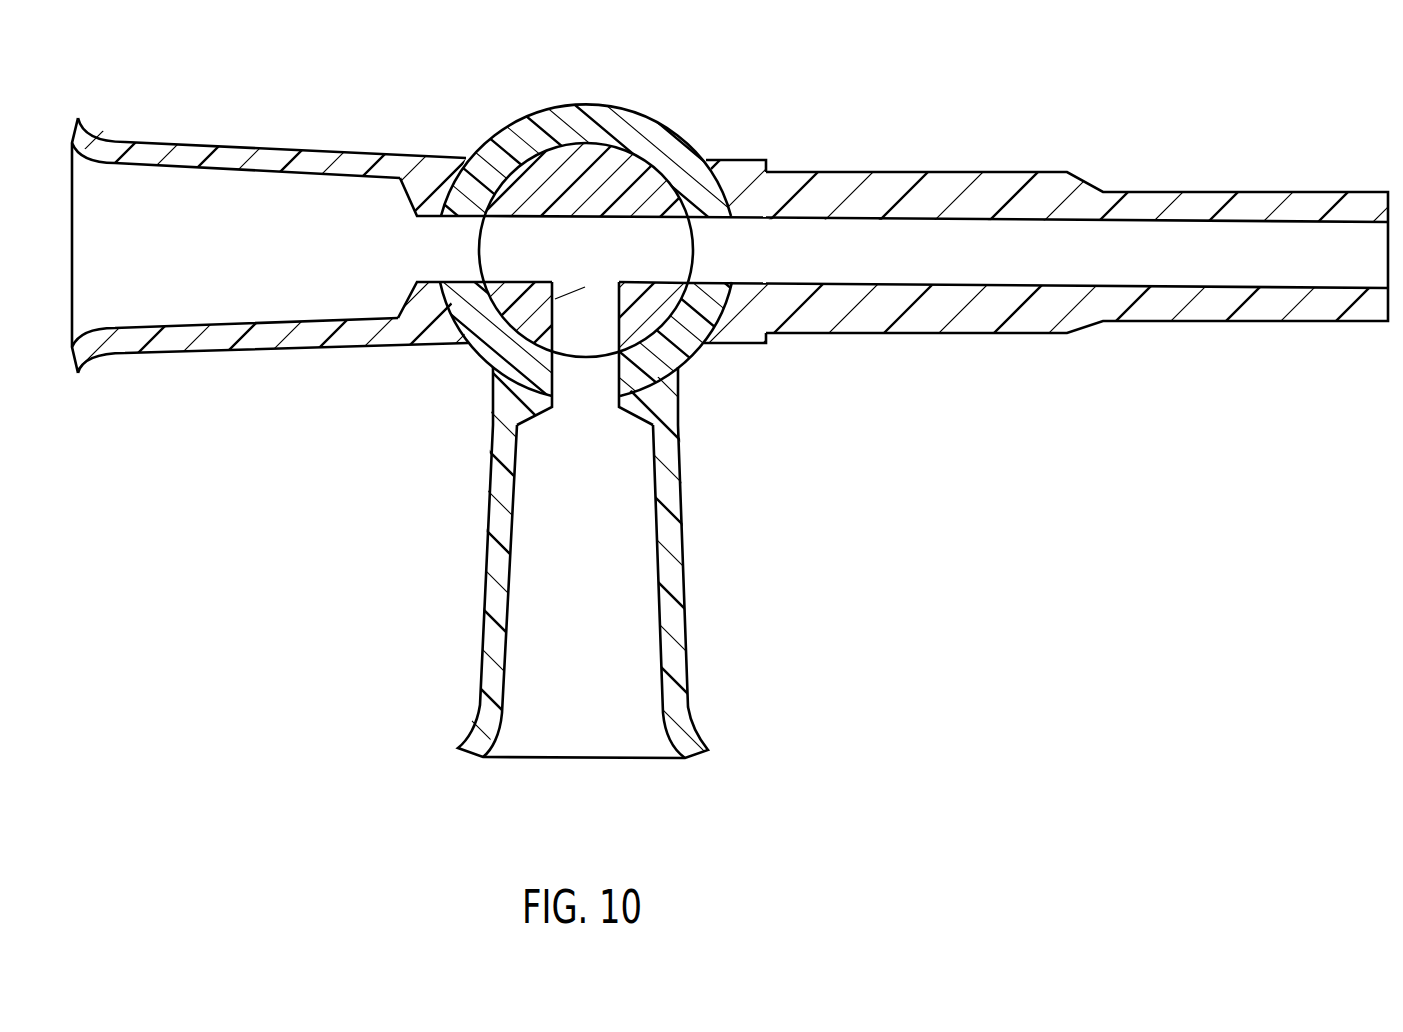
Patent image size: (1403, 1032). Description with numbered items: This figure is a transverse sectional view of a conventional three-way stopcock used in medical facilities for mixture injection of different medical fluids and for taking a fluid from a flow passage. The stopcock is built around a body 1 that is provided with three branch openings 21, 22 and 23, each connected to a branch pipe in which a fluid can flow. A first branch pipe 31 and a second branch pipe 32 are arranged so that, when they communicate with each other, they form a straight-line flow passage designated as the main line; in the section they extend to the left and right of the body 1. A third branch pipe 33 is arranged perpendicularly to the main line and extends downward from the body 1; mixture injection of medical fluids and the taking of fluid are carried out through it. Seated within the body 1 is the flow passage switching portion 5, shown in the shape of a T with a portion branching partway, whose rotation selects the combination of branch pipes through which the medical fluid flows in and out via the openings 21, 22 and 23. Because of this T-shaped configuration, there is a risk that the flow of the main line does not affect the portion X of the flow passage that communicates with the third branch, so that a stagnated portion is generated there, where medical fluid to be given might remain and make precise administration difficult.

The body 1 is at (508, 133).
The flow passage switching portion 5 is at (648, 184).
The branch opening 21 is at (460, 248).
The branch opening 22 is at (713, 250).
The branch opening 23 is at (587, 328).
The first branch pipe 31 is at (263, 342).
The second branch pipe 32 is at (1260, 308).
The third branch pipe 33 is at (677, 563).
The portion X is at (483, 350).